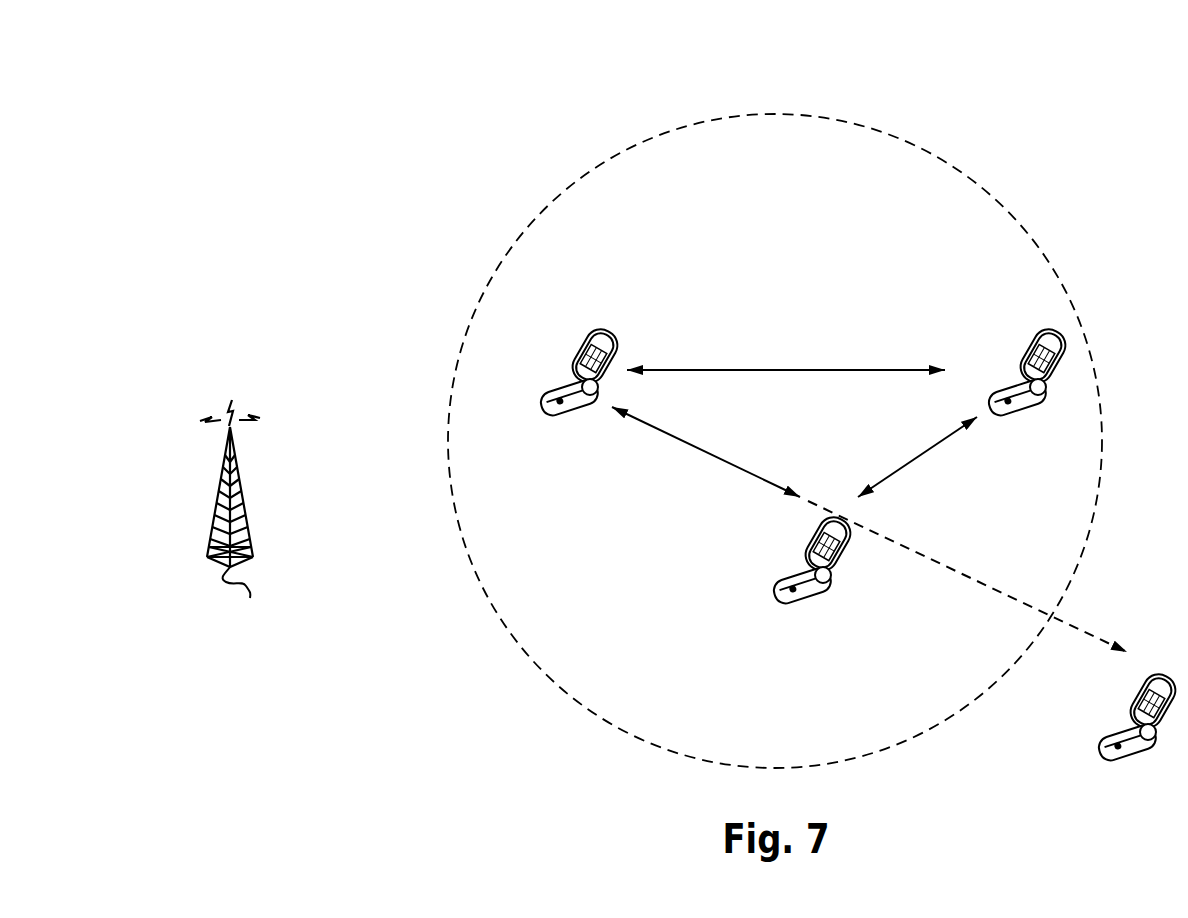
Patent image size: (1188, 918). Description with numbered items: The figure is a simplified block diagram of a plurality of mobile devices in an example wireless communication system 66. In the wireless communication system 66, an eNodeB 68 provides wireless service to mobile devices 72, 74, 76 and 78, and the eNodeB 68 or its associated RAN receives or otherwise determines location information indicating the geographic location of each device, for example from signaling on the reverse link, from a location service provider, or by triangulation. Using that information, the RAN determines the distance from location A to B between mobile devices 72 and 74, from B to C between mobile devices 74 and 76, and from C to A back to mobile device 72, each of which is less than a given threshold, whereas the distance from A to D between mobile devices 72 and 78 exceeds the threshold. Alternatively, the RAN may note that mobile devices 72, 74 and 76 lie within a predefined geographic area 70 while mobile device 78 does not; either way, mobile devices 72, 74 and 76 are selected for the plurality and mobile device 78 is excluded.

The wireless communication system 66 is at (1030, 102).
The eNodeB 68 is at (231, 517).
The predefined geographic area 70 is at (629, 690).
The mobile device 72 is at (566, 364).
The mobile device 74 is at (796, 556).
The mobile device 76 is at (1011, 367).
The mobile device 78 is at (1121, 714).